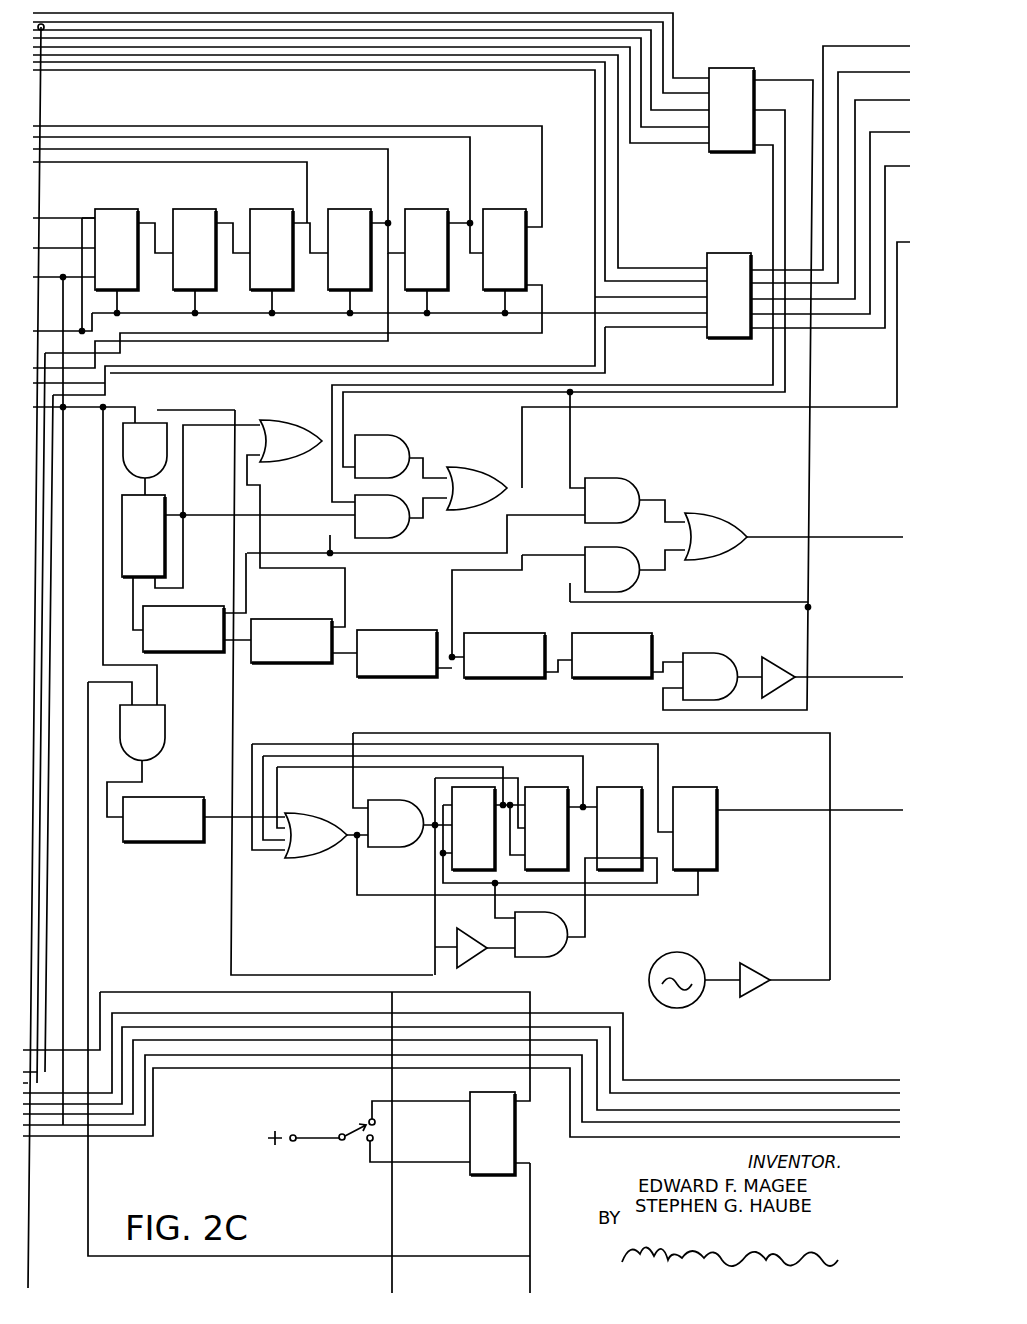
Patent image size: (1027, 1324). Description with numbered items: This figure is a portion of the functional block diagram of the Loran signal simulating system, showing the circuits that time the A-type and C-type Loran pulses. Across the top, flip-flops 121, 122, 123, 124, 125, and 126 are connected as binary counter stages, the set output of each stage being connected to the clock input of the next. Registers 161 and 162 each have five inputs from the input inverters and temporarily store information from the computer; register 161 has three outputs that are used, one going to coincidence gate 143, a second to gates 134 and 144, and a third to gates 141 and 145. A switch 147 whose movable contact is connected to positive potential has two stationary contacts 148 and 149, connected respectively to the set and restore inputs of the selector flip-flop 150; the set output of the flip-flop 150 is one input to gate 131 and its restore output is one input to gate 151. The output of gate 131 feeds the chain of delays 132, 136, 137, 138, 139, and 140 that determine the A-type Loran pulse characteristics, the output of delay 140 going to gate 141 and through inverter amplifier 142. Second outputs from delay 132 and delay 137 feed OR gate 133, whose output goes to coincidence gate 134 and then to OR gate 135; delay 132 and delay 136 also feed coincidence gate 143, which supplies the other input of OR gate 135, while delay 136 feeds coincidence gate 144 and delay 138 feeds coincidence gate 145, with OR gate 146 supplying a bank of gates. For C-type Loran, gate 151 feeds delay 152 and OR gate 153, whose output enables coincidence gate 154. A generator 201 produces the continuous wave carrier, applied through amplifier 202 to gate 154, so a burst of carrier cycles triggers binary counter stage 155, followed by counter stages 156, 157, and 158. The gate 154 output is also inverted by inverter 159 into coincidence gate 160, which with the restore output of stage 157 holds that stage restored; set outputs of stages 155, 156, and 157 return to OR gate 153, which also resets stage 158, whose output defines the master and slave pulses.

The flip-flop 121 is at (126, 215).
The flip-flop 122 is at (205, 215).
The flip-flop 123 is at (283, 215).
The flip-flop 124 is at (360, 215).
The flip-flop 125 is at (437, 215).
The flip-flop 126 is at (515, 215).
The register 161 is at (740, 76).
The register 162 is at (742, 266).
The gate 131 is at (142, 434).
The delay 132 is at (160, 520).
The OR gate 133 is at (298, 426).
The coincidence gate 134 is at (395, 443).
The OR gate 135 is at (483, 474).
The coincidence gate 143 is at (387, 532).
The coincidence gate 144 is at (624, 490).
The coincidence gate 145 is at (634, 585).
The OR gate 146 is at (723, 522).
The delay 136 is at (178, 620).
The delay 137 is at (300, 628).
The delay 138 is at (410, 642).
The delay 139 is at (516, 644).
The delay 140 is at (624, 644).
The gate 141 is at (722, 662).
The inverter amplifier 142 is at (792, 664).
The gate 151 is at (160, 740).
The delay 152 is at (148, 814).
The OR gate 153 is at (324, 824).
The coincidence gate 154 is at (408, 810).
The binary counter stage 155 is at (458, 864).
The counter stage 156 is at (564, 798).
The counter stage 157 is at (636, 798).
The counter stage 158 is at (712, 798).
The inverter 159 is at (456, 956).
The coincidence gate 160 is at (554, 946).
The generator 201 is at (698, 958).
The amplifier 202 is at (786, 958).
The switch 147 is at (317, 1130).
The stationary contact 148 is at (367, 1118).
The stationary contact 149 is at (368, 1142).
The selector flip-flop 150 is at (505, 1156).